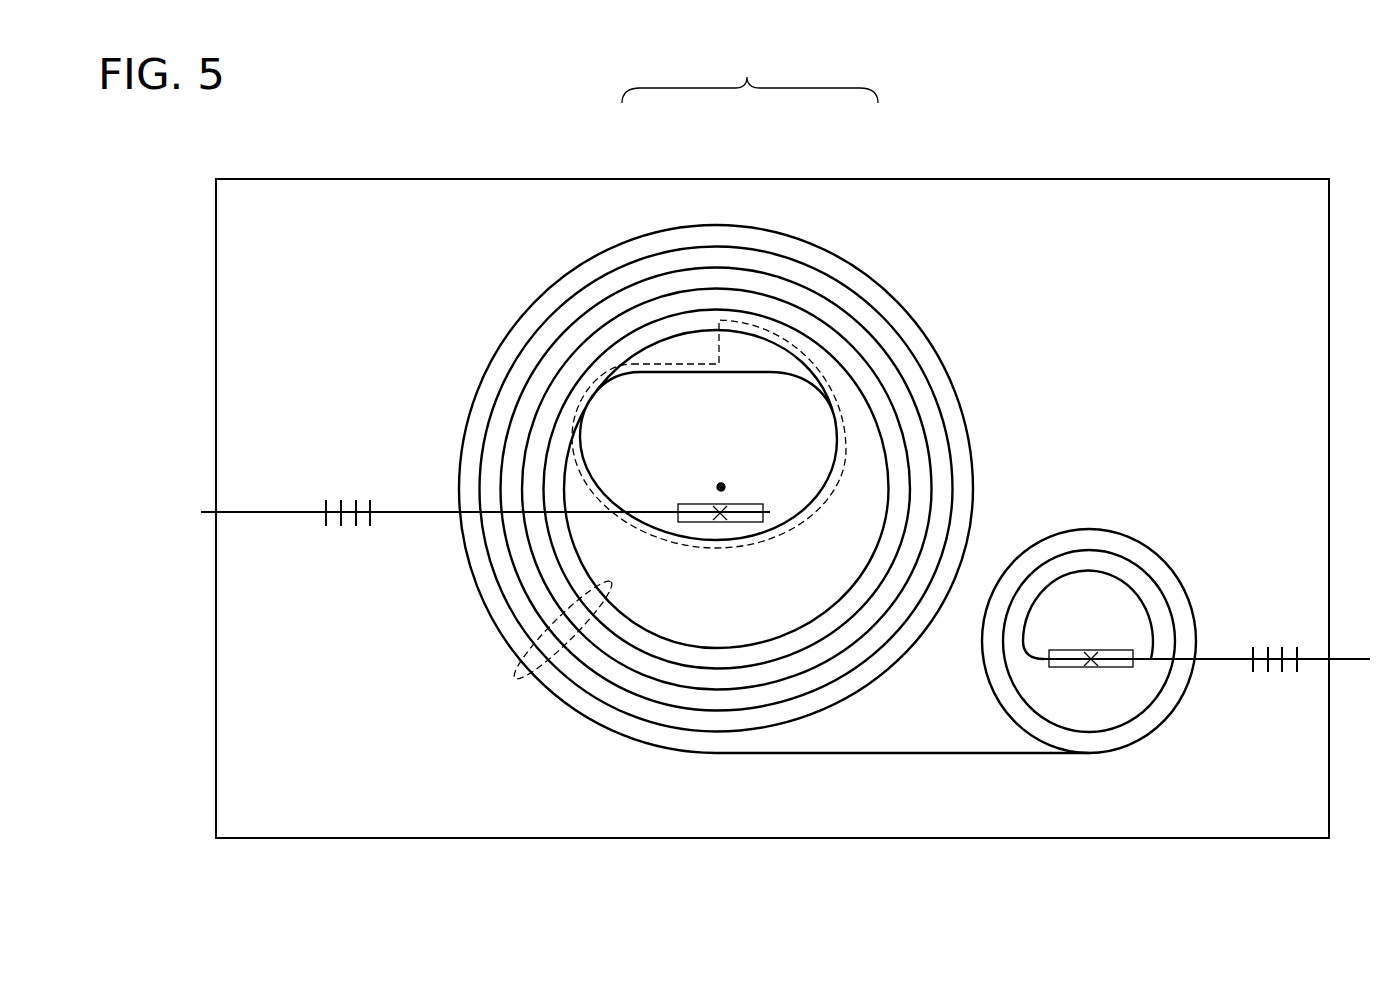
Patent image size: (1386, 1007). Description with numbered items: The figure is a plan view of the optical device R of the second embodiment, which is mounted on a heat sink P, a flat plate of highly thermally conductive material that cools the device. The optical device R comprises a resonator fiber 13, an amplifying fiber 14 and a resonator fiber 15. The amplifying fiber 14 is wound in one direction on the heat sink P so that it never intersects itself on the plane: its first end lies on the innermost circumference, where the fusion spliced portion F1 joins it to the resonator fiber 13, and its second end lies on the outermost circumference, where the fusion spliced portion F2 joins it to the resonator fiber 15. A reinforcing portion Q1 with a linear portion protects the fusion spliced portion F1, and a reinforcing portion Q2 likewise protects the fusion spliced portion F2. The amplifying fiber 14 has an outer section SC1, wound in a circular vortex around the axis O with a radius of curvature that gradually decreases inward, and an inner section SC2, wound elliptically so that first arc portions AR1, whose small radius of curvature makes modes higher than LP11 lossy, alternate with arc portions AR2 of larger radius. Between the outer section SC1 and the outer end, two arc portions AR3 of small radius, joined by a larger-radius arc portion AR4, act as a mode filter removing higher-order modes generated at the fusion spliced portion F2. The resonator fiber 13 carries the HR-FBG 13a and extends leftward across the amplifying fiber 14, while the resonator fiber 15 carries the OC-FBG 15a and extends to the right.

The resonator fiber 13 is at (394, 500).
The HR-FBG 13a is at (337, 525).
The amplifying fiber 14 is at (718, 210).
The resonator fiber 15 is at (1312, 650).
The OC-FBG 15a is at (1282, 672).
The heat sink P is at (360, 839).
The optical device R is at (750, 73).
The axis O is at (721, 483).
The reinforcing portion Q1 is at (697, 504).
The reinforcing portion Q2 is at (1113, 668).
The outer section SC1 is at (517, 680).
The inner section SC2 is at (588, 490).
The first arc portion AR1 is at (590, 430).
The second arc portion AR2 is at (699, 374).
The third arc portion AR3 is at (1020, 626).
The arc portion AR4 is at (1088, 568).
The fusion spliced portion F1 is at (720, 523).
The fusion spliced portion F2 is at (1090, 668).